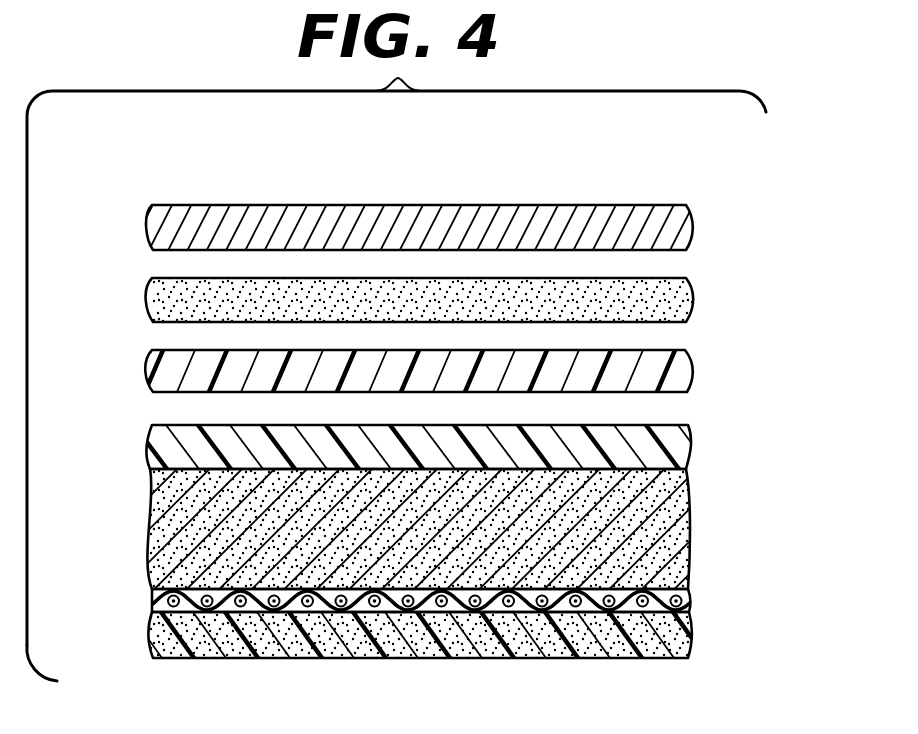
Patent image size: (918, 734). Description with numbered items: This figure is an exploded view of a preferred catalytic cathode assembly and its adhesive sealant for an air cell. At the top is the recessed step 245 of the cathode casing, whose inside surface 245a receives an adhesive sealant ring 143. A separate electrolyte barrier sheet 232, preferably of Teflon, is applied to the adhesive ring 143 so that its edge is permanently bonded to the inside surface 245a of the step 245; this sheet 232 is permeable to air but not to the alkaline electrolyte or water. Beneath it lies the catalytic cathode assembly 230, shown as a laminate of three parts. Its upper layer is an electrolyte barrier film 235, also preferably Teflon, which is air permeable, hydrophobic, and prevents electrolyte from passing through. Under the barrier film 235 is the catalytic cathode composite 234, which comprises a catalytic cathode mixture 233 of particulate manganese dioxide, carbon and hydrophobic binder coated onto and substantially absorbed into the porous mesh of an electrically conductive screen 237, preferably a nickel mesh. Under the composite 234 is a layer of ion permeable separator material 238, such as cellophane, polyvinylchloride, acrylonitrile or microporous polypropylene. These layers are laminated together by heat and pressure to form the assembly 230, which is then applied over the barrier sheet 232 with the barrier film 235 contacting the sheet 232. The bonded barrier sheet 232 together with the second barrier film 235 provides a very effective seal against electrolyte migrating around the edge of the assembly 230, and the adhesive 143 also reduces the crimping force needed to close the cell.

The step 245 is at (672, 224).
The inside surface of step 245a is at (183, 252).
The adhesive sealant ring 143 is at (675, 307).
The electrolyte barrier sheet 232 is at (673, 373).
The catalytic cathode assembly 230 is at (446, 569).
The electrolyte barrier film 235 is at (682, 448).
The catalytic cathode mixture 233 is at (668, 503).
The catalytic cathode composite 234 is at (496, 606).
The electrically conductive screen 237 is at (483, 631).
The ion permeable separator 238 is at (628, 648).